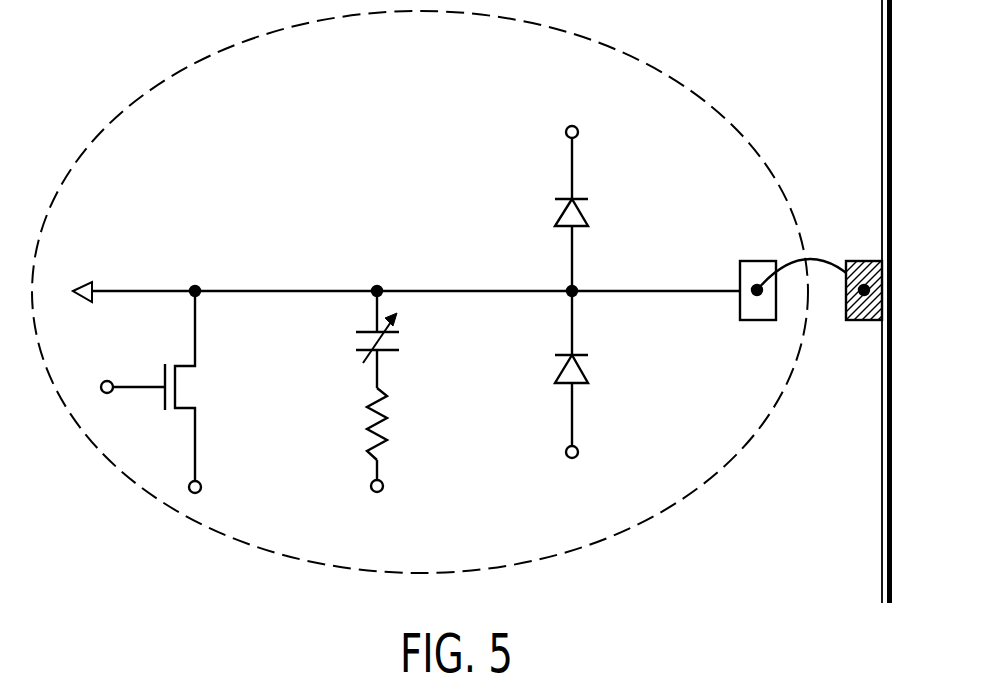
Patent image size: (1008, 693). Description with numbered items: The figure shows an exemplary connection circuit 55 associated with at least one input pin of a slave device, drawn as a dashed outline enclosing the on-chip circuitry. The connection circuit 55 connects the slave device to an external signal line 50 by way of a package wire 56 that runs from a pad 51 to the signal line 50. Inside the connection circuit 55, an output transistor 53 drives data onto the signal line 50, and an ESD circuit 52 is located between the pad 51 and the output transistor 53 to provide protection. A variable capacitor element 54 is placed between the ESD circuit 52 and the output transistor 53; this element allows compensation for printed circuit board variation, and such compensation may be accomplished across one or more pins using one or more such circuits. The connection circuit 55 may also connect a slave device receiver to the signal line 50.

The signal line 50 is at (882, 596).
The pad 51 is at (762, 322).
The ESD circuit 52 is at (578, 455).
The output transistor 53 is at (201, 488).
The variable capacitor element 54 is at (383, 487).
The connection circuit 55 is at (568, 530).
The package wire 56 is at (823, 259).